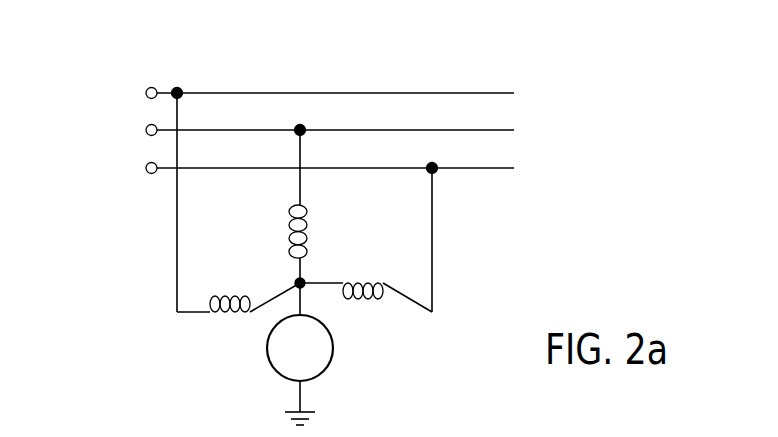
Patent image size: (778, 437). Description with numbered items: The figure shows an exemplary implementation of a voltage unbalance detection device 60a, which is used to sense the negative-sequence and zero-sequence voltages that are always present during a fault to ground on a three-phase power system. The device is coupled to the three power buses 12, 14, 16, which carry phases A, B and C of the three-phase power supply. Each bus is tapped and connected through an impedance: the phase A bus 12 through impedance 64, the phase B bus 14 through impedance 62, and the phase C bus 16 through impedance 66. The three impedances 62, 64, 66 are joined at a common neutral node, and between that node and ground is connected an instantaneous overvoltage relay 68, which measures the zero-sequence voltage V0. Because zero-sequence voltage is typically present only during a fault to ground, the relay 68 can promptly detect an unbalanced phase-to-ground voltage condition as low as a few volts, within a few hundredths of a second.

The voltage unbalance detection device 60a is at (69, 27).
The power bus 12 is at (491, 93).
The power bus 14 is at (491, 130).
The power bus 16 is at (491, 168).
The impedance 62 is at (287, 221).
The impedance 64 is at (232, 295).
The impedance 66 is at (373, 283).
The instantaneous overvoltage relay 68 is at (276, 372).